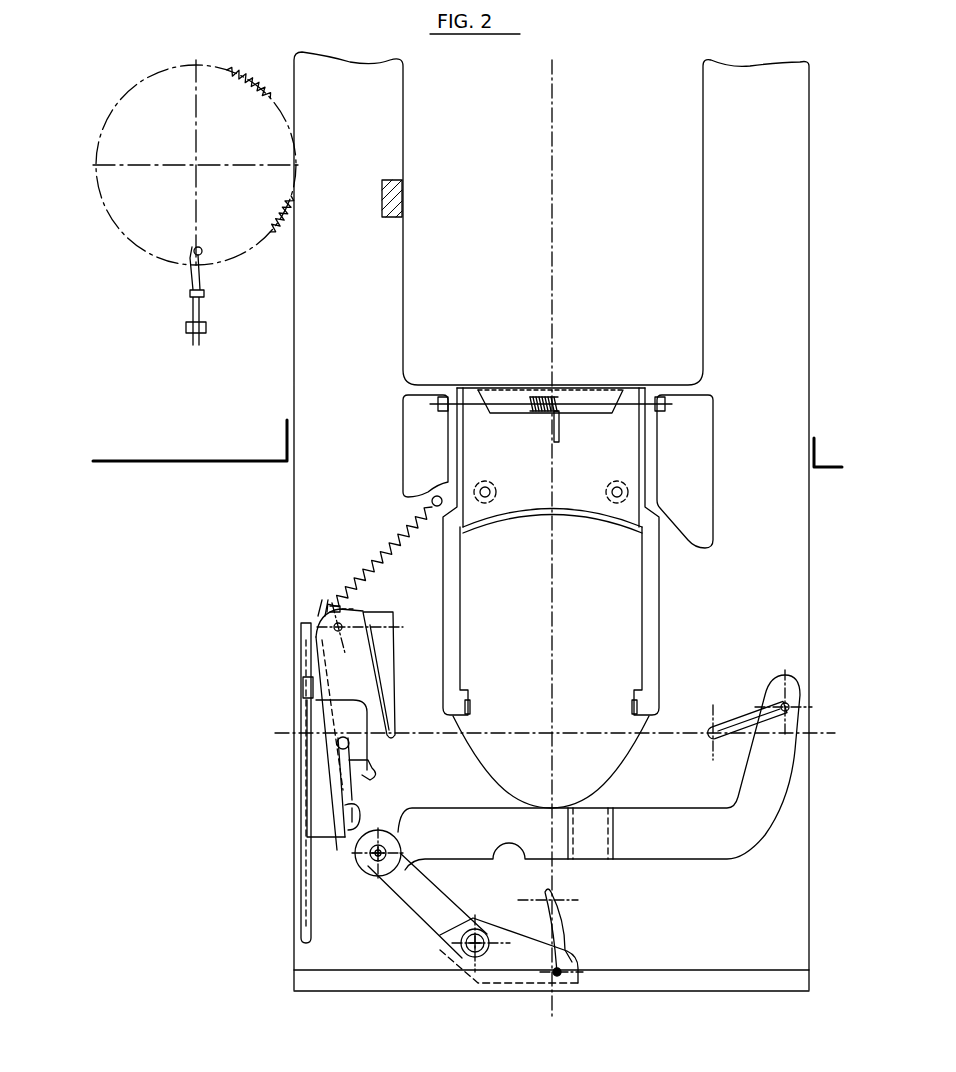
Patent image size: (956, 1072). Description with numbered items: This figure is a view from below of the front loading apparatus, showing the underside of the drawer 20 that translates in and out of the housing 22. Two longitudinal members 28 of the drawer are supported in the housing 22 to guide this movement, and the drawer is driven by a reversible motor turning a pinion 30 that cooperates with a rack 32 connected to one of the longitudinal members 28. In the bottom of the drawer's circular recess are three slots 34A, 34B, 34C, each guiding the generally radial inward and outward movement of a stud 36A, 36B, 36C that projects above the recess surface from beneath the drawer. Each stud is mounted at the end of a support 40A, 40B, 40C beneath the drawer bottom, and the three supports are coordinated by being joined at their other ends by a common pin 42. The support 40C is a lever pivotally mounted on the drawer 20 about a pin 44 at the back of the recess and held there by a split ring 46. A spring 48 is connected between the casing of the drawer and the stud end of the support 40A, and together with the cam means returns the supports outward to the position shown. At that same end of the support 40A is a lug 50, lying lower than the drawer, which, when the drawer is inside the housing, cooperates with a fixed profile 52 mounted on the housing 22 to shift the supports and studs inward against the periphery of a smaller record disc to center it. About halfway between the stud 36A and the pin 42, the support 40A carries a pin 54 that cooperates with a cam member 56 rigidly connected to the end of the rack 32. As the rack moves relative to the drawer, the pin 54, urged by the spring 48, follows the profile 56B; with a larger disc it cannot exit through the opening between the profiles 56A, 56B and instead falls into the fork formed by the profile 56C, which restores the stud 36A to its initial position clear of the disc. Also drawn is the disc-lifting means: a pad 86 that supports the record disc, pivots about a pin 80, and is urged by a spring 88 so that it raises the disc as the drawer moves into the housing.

The drawer 20 is at (310, 958).
The housing 22 is at (272, 468).
The longitudinal members 28 is at (345, 80).
The pinion 30 is at (170, 233).
The rack 32 is at (303, 905).
The slot 34A is at (395, 642).
The slot 34B is at (720, 730).
The slot 34C is at (570, 924).
The stud 36A is at (335, 630).
The stud 36B is at (788, 700).
The stud 36C is at (562, 976).
The support 40A is at (330, 660).
The support 40B is at (718, 862).
The support 40C is at (518, 960).
The common pin 42 is at (377, 858).
The pin 44 is at (465, 960).
The split ring 46 is at (460, 943).
The spring 48 is at (385, 545).
The lug 50 is at (345, 610).
The fixed profile 52 is at (402, 198).
The pin 54 is at (337, 747).
The cam member 56 is at (320, 820).
The profile 56A is at (375, 790).
The profile 56B is at (370, 768).
The profile 56C is at (357, 854).
The pin 80 is at (592, 404).
The pad 86 is at (452, 652).
The spring 88 is at (548, 404).